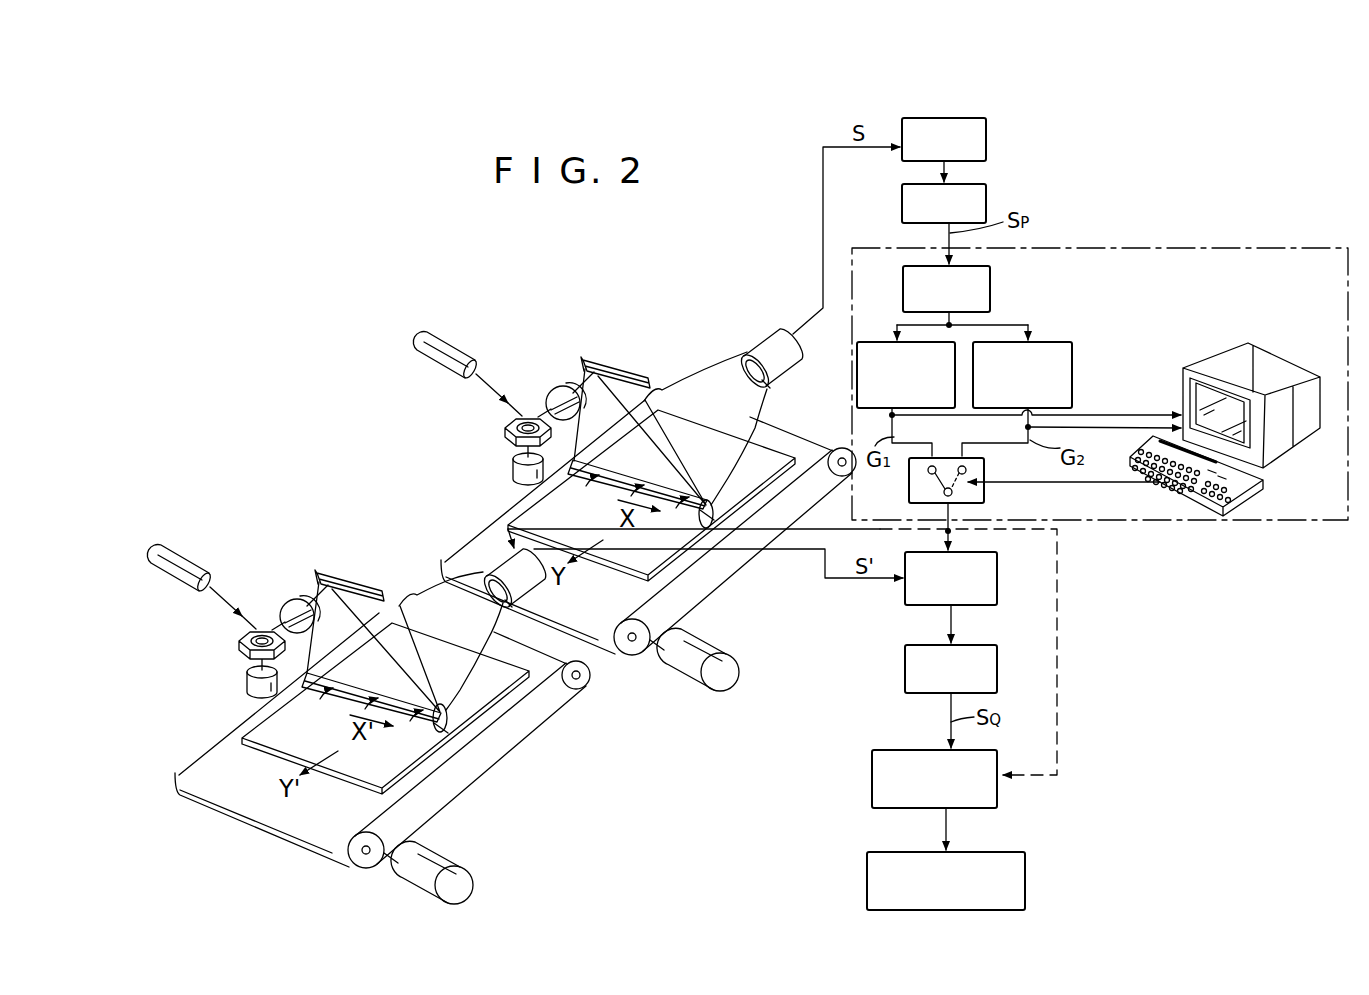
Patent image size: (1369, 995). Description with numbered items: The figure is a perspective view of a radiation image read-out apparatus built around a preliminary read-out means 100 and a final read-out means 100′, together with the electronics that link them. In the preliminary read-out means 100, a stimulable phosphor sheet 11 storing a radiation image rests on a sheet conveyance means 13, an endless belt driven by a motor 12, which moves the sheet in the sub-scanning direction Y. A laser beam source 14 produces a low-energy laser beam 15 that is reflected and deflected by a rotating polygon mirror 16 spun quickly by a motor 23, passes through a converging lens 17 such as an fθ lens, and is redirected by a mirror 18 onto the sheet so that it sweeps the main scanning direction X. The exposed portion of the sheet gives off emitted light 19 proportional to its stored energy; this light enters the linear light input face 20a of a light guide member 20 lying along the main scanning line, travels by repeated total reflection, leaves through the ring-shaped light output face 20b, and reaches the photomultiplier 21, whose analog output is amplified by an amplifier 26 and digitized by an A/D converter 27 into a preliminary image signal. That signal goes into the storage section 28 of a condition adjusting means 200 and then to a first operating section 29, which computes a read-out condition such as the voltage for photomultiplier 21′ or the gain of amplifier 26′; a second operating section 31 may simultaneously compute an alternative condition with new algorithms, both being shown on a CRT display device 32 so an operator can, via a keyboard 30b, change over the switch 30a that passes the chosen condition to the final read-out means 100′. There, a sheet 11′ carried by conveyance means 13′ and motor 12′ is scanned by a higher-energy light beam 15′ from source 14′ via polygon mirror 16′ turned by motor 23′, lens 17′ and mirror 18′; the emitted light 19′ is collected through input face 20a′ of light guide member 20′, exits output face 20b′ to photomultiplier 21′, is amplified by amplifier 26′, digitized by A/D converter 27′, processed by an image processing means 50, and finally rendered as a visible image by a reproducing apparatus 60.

The preliminary read-out means 100 is at (605, 334).
The final read-out means 100′ is at (328, 538).
The stimulable phosphor sheet 11 is at (702, 560).
The stimulable phosphor sheet 11′ is at (398, 762).
The motor 12 is at (706, 650).
The motor 12′ is at (437, 866).
The sheet conveyance means 13 is at (640, 592).
The sheet conveyance means 13′ is at (367, 803).
The laser beam source 14 is at (455, 350).
The laser beam source 14′ is at (197, 559).
The laser beam 15 is at (496, 388).
The light beam 15′ is at (233, 600).
The rotating polygon mirror 16 is at (505, 427).
The rotating polygon mirror 16′ is at (242, 640).
The converging lens 17 is at (548, 388).
The converging lens 17′ is at (291, 598).
The mirror 18 is at (637, 372).
The mirror 18′ is at (373, 588).
The emitted light 19 is at (603, 478).
The emitted light 19′ is at (333, 697).
The light guide member 20 is at (710, 388).
The light guide member 20′ is at (440, 604).
The linear light input face 20a is at (714, 532).
The linear light input face 20a′ is at (436, 745).
The ring-shaped light output face 20b is at (775, 392).
The ring-shaped light output face 20b′ is at (514, 607).
The photomultiplier 21 is at (758, 345).
The photomultiplier 21′ is at (500, 558).
The motor 23 is at (513, 463).
The motor 23′ is at (247, 677).
The amplifier 26 is at (988, 147).
The amplifier 26′ is at (997, 590).
The A/D converter 27 is at (988, 207).
The A/D converter 27′ is at (997, 675).
The storage section 28 is at (990, 291).
The first operating section 29 is at (880, 340).
The second operating section 31 is at (1060, 342).
The switch 30a is at (984, 492).
The keyboard 30b is at (1262, 480).
The CRT display device 32 is at (1225, 350).
The condition adjusting means 200 is at (1158, 248).
The image processing means 50 is at (997, 760).
The reproducing apparatus 60 is at (1020, 855).